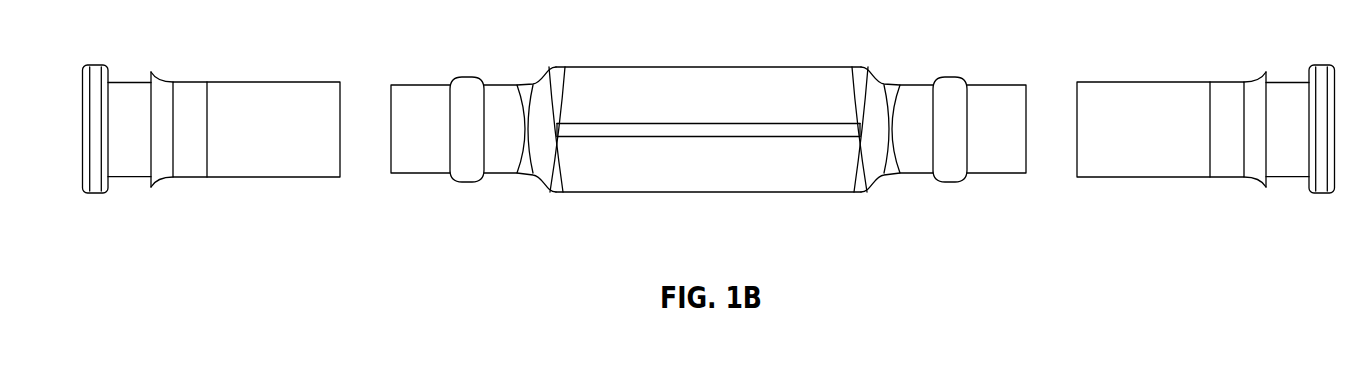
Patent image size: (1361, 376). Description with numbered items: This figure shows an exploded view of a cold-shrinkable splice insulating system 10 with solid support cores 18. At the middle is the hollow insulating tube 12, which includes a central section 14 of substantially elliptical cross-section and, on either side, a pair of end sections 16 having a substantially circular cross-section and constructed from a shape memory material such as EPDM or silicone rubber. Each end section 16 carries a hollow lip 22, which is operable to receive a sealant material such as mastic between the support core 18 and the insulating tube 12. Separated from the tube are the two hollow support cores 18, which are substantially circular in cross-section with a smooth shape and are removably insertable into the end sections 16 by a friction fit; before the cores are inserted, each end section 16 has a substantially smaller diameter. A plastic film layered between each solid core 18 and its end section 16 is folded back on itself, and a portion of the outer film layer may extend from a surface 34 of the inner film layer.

The cold-shrinkable splice insulating system 10 is at (781, 222).
The hollow insulating tube 12 is at (777, 65).
The central section 14 is at (618, 65).
The end sections 16 is at (410, 85).
The solid support cores 18 is at (193, 180).
The hollow lip 22 is at (468, 77).
The surface of the inner film layer 34 is at (160, 78).